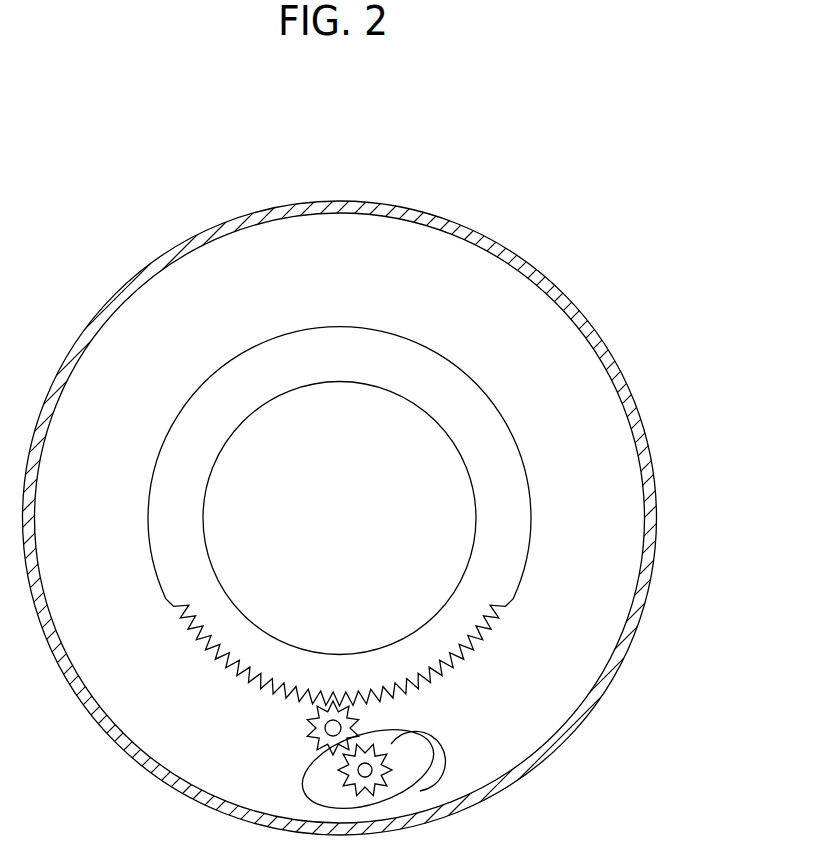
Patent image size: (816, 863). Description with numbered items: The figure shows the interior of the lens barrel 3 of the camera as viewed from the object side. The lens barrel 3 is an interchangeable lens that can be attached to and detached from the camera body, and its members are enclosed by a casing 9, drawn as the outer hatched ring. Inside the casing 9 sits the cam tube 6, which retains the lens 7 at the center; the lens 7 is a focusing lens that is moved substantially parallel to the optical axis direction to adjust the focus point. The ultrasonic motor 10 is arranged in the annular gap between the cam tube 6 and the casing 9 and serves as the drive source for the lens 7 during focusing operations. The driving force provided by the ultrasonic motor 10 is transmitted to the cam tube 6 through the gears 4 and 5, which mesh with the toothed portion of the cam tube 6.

The lens barrel 3 is at (216, 213).
The casing 9 is at (515, 258).
The cam tube 6 is at (471, 388).
The lens 7 is at (339, 518).
The gear 5 is at (305, 733).
The gear 4 is at (417, 748).
The ultrasonic motor 10 is at (434, 758).